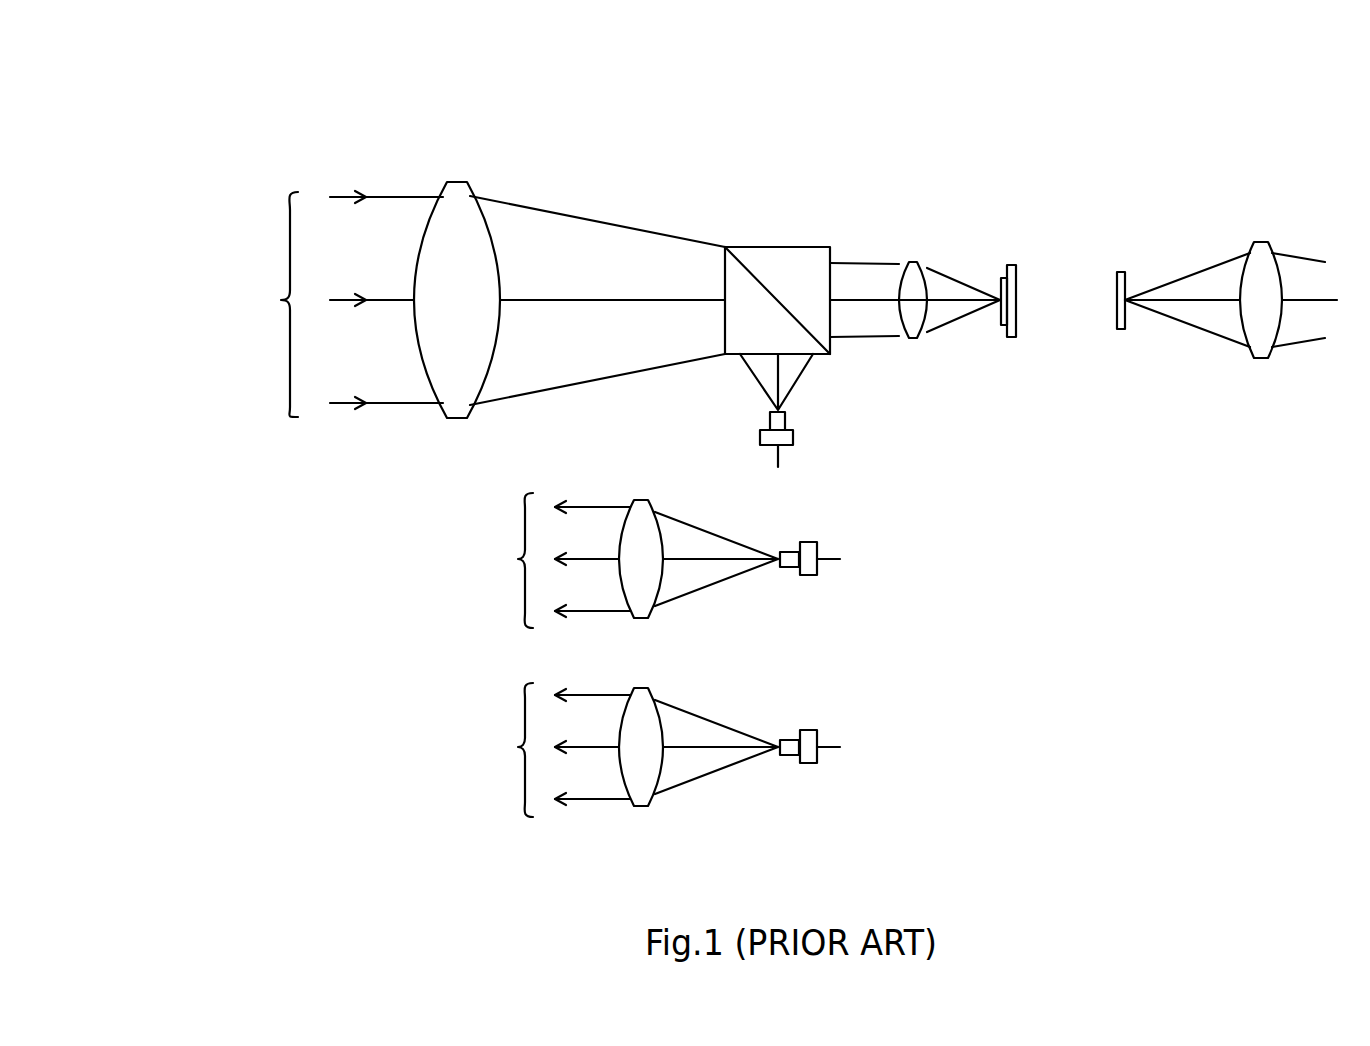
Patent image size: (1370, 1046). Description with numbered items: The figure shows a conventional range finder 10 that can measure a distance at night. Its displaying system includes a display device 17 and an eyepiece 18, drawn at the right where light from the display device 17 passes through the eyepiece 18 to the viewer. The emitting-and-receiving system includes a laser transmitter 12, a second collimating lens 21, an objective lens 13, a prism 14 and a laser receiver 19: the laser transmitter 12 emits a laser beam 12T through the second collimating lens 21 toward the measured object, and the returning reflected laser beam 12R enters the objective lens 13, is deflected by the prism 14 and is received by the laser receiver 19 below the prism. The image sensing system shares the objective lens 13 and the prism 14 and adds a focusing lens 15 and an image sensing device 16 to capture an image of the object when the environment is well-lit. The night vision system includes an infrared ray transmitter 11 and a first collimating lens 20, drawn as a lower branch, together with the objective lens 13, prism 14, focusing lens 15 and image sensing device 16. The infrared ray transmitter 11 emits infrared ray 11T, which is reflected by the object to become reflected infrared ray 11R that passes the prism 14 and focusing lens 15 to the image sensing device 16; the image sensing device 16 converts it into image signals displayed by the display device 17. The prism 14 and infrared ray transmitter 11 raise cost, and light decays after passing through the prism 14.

The range finder 10 is at (228, 75).
The infrared ray transmitter 11 is at (817, 761).
The laser transmitter 12 is at (817, 573).
The infrared ray 11T is at (611, 750).
The laser beam 12T is at (611, 560).
The reflected infrared ray 11R is at (963, 282).
The reflected laser beam 12R is at (747, 372).
The objective lens 13 is at (457, 182).
The prism 14 is at (775, 247).
The focusing lens 15 is at (913, 262).
The image sensing device 16 is at (1011, 265).
The display device 17 is at (1123, 272).
The eyepiece 18 is at (1262, 242).
The laser receiver 19 is at (793, 437).
The first collimating lens 20 is at (643, 806).
The second collimating lens 21 is at (643, 618).